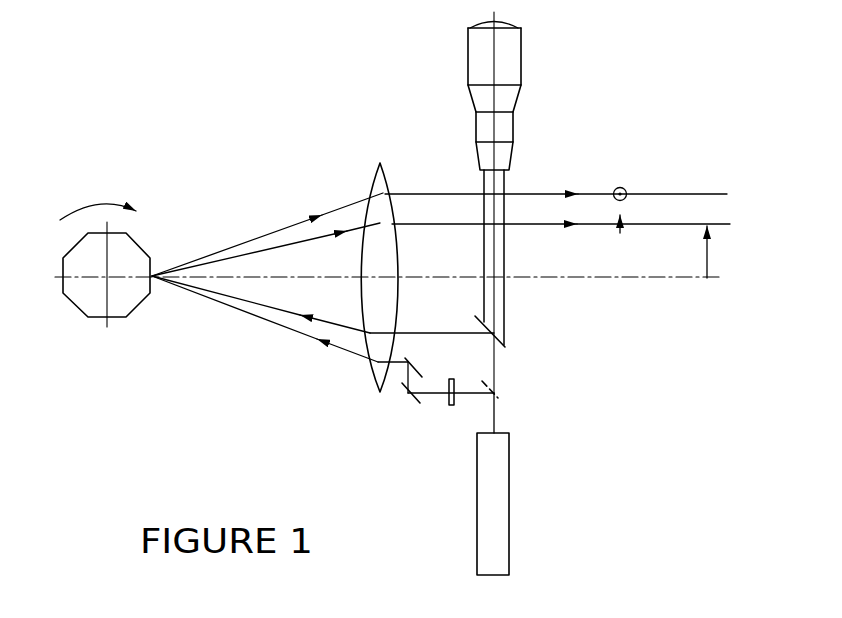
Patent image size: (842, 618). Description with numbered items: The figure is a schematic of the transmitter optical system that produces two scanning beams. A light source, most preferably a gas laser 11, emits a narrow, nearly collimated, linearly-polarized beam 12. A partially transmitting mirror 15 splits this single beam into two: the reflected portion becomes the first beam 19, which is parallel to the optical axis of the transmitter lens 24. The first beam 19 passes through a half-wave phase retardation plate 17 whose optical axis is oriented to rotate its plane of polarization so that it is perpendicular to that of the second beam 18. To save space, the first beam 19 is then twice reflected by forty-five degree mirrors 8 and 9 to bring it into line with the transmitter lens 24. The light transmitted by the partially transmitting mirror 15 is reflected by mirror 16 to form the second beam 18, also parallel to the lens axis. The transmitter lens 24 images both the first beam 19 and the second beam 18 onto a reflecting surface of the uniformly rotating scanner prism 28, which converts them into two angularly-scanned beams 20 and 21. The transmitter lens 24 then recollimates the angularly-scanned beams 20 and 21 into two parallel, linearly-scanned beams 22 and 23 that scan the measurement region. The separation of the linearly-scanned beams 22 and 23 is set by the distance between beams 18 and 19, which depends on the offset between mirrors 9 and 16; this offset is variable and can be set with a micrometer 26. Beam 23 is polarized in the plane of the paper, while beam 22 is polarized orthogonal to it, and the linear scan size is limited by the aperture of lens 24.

The 45° mirror 8 is at (399, 399).
The 45° mirror 9 is at (414, 366).
The gas laser 11 is at (510, 494).
The linearly-polarized beam 12 is at (495, 418).
The partially transmitting mirror 15 is at (501, 400).
The mirror 16 is at (503, 349).
The half-wave phase retardation plate 17 is at (452, 400).
The second beam 18 is at (403, 333).
The first beam 19 is at (397, 365).
The angularly-scanned beam 20 is at (229, 212).
The angularly-scanned beam 21 is at (295, 249).
The linearly-scanned beam 22 is at (537, 194).
The linearly-scanned beam 23 is at (537, 225).
The transmitter lens 24 is at (372, 181).
The micrometer 26 is at (521, 66).
The rotating scanner prism 28 is at (74, 299).